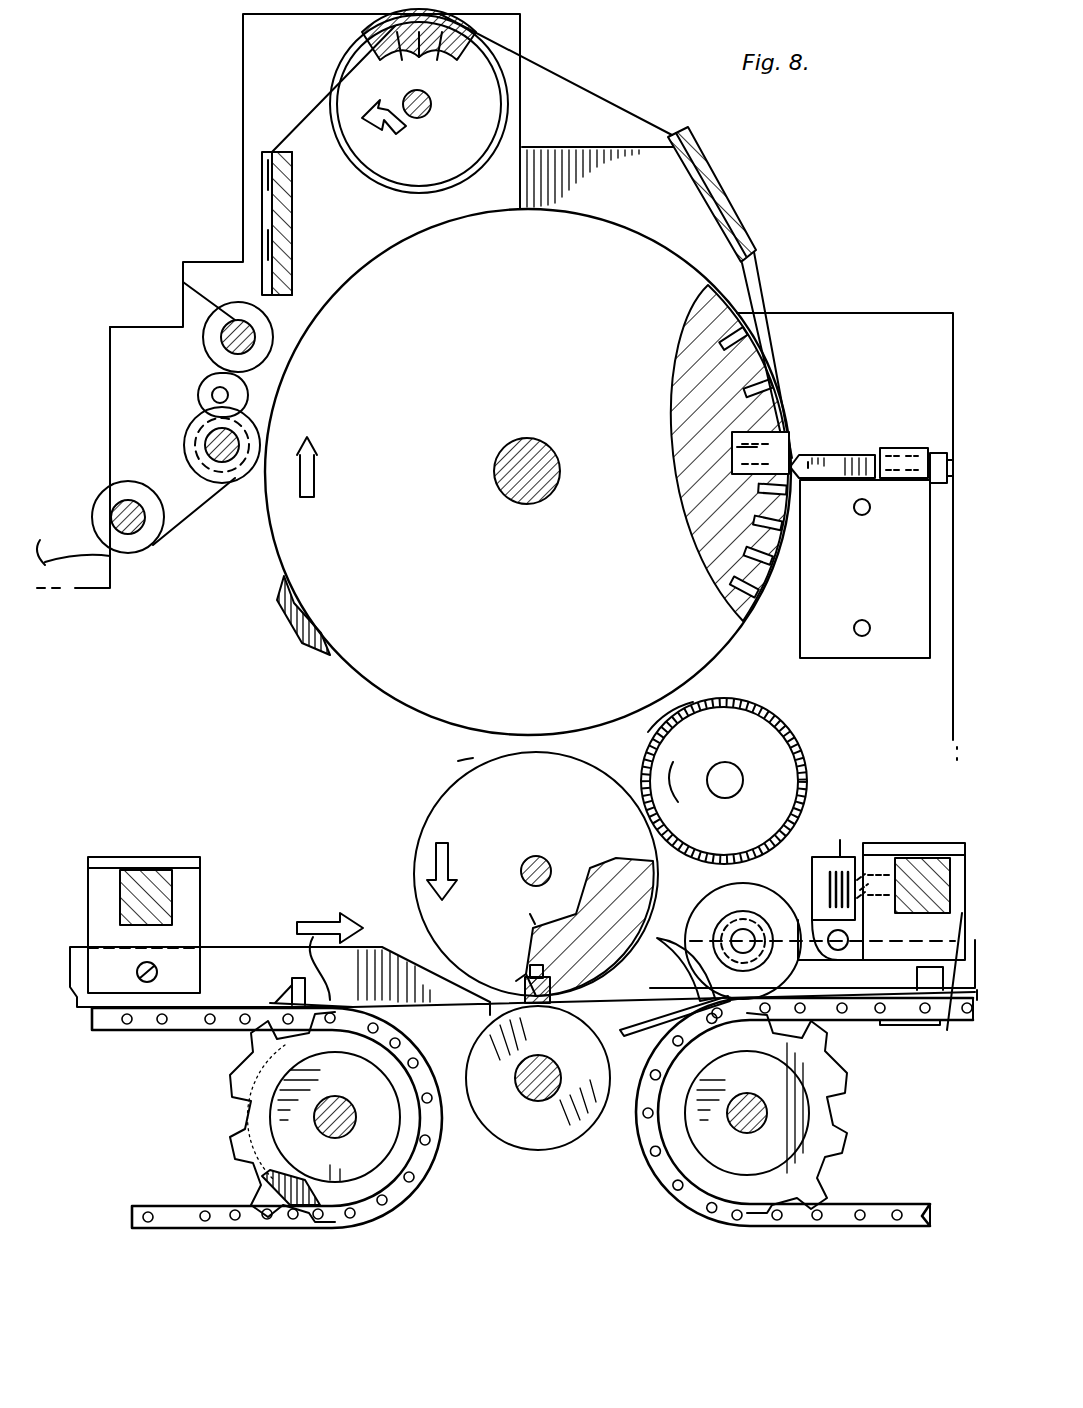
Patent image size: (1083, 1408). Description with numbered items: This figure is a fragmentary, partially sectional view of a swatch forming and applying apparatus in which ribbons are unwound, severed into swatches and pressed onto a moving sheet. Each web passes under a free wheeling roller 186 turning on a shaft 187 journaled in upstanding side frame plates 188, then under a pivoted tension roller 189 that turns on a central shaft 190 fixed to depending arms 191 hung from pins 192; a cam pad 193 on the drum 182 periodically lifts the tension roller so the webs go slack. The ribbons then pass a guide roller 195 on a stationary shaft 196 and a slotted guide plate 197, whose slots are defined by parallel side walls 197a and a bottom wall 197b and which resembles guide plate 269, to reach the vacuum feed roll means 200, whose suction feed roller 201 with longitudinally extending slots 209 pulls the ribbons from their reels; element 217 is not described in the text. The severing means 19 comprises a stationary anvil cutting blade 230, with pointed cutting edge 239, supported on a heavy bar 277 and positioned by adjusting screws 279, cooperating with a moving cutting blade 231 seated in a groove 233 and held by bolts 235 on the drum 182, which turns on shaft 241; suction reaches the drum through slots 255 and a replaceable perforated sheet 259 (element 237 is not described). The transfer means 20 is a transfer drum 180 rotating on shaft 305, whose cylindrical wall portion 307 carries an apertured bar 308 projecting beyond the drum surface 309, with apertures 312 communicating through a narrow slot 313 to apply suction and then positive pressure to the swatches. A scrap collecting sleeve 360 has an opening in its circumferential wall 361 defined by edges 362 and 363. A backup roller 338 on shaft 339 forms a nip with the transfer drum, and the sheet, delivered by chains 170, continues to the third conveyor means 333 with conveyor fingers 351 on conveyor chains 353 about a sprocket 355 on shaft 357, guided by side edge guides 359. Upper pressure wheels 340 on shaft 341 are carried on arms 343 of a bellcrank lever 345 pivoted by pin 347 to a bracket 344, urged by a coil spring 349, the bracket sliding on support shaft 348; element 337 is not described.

The severing means 19 is at (862, 430).
The transfer means 20 is at (392, 857).
The chains 170 is at (217, 1230).
The transfer drum 180 is at (443, 822).
The drum 182 is at (528, 472).
The free wheeling roller 186 is at (100, 512).
The shaft 187 is at (135, 532).
The side frame plates 188 is at (115, 335).
The tension roller 189 is at (195, 445).
The central shaft 190 is at (228, 460).
The depending arms 191 is at (212, 398).
The pins 192 is at (205, 390).
The cam pad 193 is at (284, 603).
The guide roller 195 is at (183, 282).
The stationary shaft 196 is at (225, 340).
The guide plate 197 is at (292, 250).
The parallel side walls 197a is at (267, 195).
The bottom wall 197b is at (270, 233).
The vacuum feed roll means 200 is at (228, 92).
The suction feed roller 201 is at (378, 170).
The longitudinally extending slots 209 is at (435, 58).
The shaft 217 is at (414, 118).
The anvil cutting blade 230 is at (830, 455).
The moving cutting blade 231 is at (742, 447).
The groove 233 is at (737, 477).
The bolts 235 is at (719, 445).
The tip 237 is at (808, 462).
The pointed cutting edge 239 is at (818, 478).
The shaft 241 is at (497, 450).
The slots 255 is at (690, 330).
The removable sheet 259 is at (702, 285).
The guide plate 269 is at (732, 173).
The bar 277 is at (865, 569).
The adjusting screws 279 is at (938, 453).
The shaft 305 is at (524, 859).
The cylindrical wall portion 307 is at (580, 874).
The apertured bar 308 is at (553, 997).
The drum surface 309 is at (458, 778).
The apertures 312 is at (516, 981).
The narrow slot 313 is at (530, 914).
The third conveyor means 333 is at (810, 1230).
The arm 337 is at (841, 842).
The backup roller 338 is at (527, 1125).
The rotatable shaft 339 is at (555, 1103).
The upper pressure wheels 340 is at (700, 920).
The rotatable shaft 341 is at (728, 941).
The arms 343 is at (810, 920).
The bracket 344 is at (813, 986).
The bellcrank lever 345 is at (823, 857).
The pin 347 is at (838, 950).
The support shaft 348 is at (923, 867).
The coil spring 349 is at (880, 832).
The conveyor fingers 351 is at (899, 1040).
The conveyor chains 353 is at (853, 1203).
The sprocket 355 is at (855, 1120).
The shaft 357 is at (727, 1118).
The side edge guides 359 is at (670, 977).
The scrap collecting sleeve 360 is at (788, 717).
The circumferential wall 361 is at (655, 724).
The edge 362 is at (691, 764).
The edge 363 is at (668, 835).